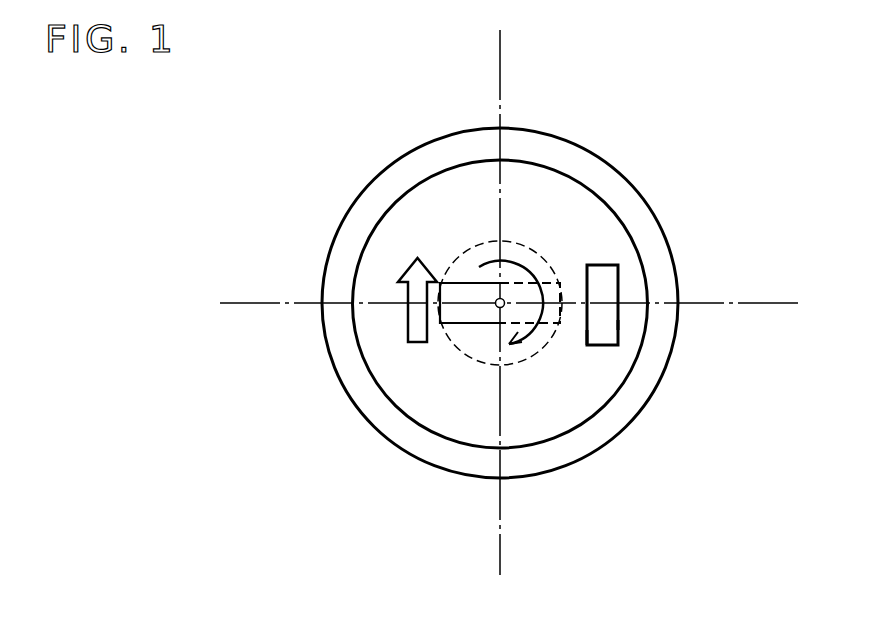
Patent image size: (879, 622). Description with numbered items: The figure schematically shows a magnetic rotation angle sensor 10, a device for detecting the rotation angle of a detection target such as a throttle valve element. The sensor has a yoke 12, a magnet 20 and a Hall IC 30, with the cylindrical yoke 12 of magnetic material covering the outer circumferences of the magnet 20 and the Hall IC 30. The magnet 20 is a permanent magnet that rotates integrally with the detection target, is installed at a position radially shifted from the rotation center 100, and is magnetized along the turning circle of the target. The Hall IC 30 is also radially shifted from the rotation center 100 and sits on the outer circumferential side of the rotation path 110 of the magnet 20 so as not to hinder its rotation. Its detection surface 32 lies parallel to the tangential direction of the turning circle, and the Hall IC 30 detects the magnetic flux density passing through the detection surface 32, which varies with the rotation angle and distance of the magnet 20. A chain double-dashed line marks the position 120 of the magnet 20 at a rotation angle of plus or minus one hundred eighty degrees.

The magnetic rotation angle sensor 10 is at (510, 309).
The yoke 12 is at (362, 227).
The magnet 20 is at (470, 318).
The Hall IC 30 is at (607, 285).
The detection surface 32 is at (618, 323).
The rotation center 100 is at (500, 303).
The rotation path 110 is at (480, 240).
The position 120 is at (547, 327).